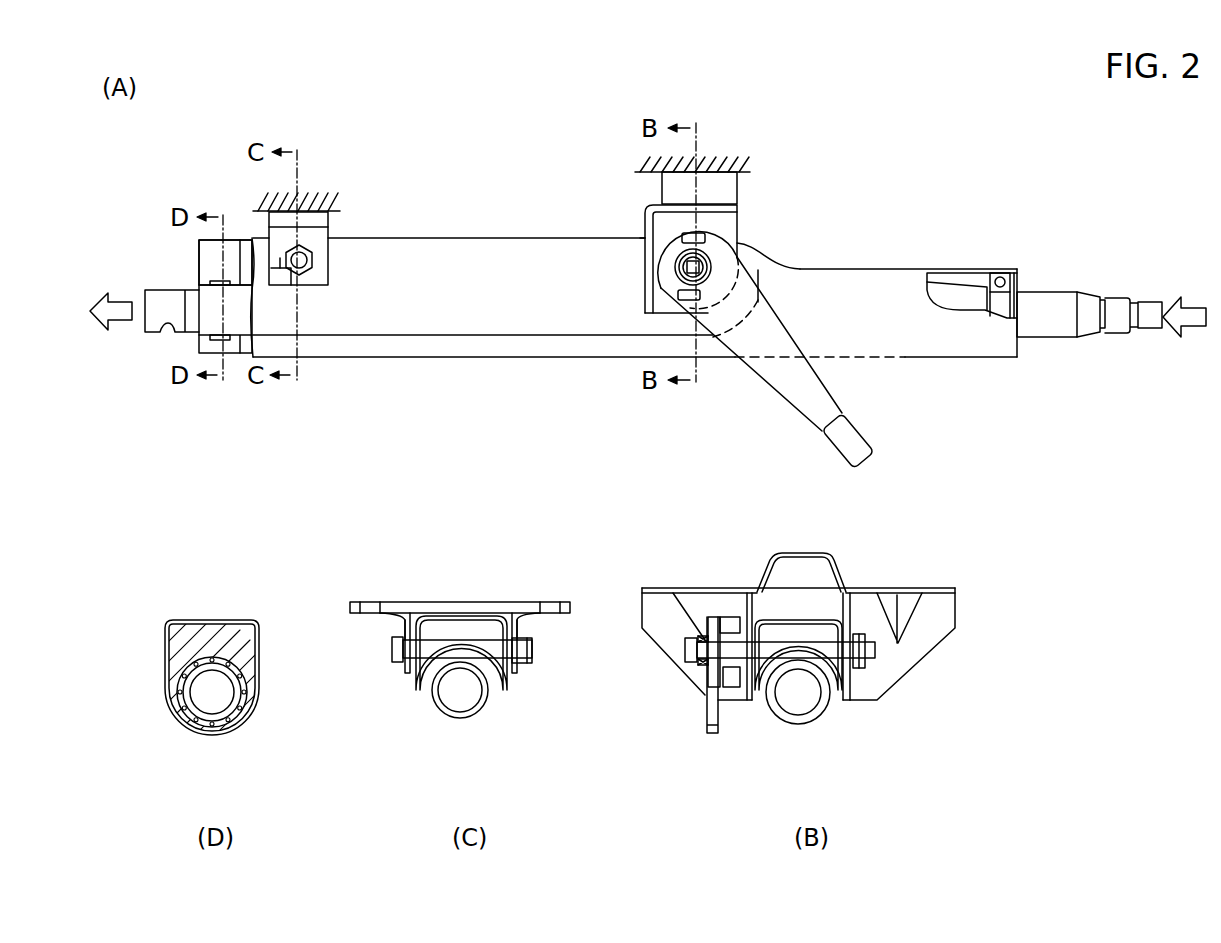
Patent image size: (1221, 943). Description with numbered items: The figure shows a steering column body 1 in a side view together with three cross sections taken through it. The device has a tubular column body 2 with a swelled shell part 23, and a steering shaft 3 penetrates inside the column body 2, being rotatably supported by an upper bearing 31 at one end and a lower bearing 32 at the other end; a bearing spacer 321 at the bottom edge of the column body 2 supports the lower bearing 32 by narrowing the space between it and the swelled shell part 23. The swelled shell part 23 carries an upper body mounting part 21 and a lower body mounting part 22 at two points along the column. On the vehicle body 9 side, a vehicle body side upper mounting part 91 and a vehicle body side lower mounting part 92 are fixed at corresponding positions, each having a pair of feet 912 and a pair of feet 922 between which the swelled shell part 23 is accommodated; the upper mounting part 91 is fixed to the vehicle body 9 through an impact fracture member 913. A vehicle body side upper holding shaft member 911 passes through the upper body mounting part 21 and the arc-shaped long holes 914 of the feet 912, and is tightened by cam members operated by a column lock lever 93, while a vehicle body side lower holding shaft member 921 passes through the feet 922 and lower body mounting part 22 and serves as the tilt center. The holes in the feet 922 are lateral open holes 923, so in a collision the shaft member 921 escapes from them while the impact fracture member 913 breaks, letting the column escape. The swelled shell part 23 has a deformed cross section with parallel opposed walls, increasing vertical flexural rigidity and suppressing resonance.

The steering column body 1 is at (506, 87).
The column body 2 is at (473, 350).
The steering shaft 3 is at (1060, 330).
The vehicle body 9 is at (308, 202).
The upper body mounting part 21 is at (723, 257).
The lower body mounting part 22 is at (307, 280).
The swelled shell part 23 is at (483, 240).
The upper bearing 31 is at (1017, 278).
The lower bearing 32 is at (212, 277).
The bearing spacer 321 is at (212, 255).
The vehicle body side upper mounting part 91 is at (738, 212).
The vehicle body side lower mounting part 92 is at (338, 233).
The column lock lever 93 is at (805, 414).
The vehicle body side upper holding shaft member 911 is at (875, 652).
The feet 912 is at (843, 610).
The impact fracture member 913 is at (673, 190).
The arc-shaped long hole 914 is at (850, 627).
The vehicle body side lower holding shaft member 921 is at (412, 673).
The feet 922 is at (405, 630).
The lateral open hole 923 is at (280, 258).